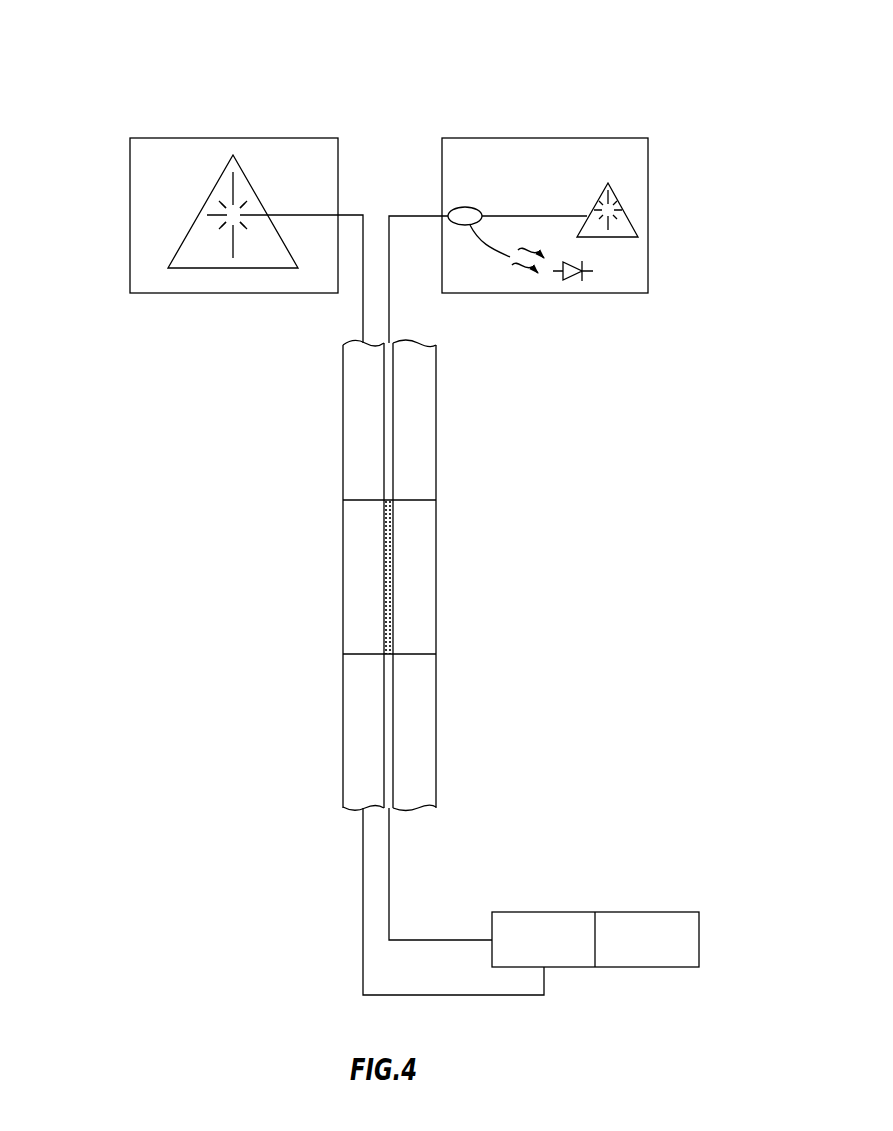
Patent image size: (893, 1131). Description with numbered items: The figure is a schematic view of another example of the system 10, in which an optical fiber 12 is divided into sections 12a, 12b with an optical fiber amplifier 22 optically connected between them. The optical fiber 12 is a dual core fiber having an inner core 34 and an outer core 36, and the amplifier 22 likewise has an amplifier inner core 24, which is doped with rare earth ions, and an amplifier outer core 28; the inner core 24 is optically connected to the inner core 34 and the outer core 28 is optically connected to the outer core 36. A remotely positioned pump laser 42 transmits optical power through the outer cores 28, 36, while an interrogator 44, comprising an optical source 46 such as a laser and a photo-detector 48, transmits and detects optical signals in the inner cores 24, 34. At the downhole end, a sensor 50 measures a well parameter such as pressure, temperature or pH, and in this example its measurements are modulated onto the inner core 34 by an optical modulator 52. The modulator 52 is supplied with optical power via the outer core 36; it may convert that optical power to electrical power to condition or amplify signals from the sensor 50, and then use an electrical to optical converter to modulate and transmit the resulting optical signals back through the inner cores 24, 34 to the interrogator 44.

The system 10 is at (665, 58).
The optical fiber 12 is at (397, 575).
The optical fiber section 12a is at (436, 405).
The optical fiber section 12b is at (436, 718).
The optical fiber amplifier 22 is at (389, 577).
The amplifier inner core 24 is at (384, 605).
The amplifier outer core 28 is at (353, 548).
The inner core 34 is at (394, 362).
The outer core 36 is at (422, 457).
The pump laser 42 is at (130, 182).
The interrogator 44 is at (603, 244).
The optical source 46 is at (638, 220).
The photo-detector 48 is at (573, 282).
The downhole sensor 50 is at (644, 906).
The optical modulator 52 is at (545, 912).